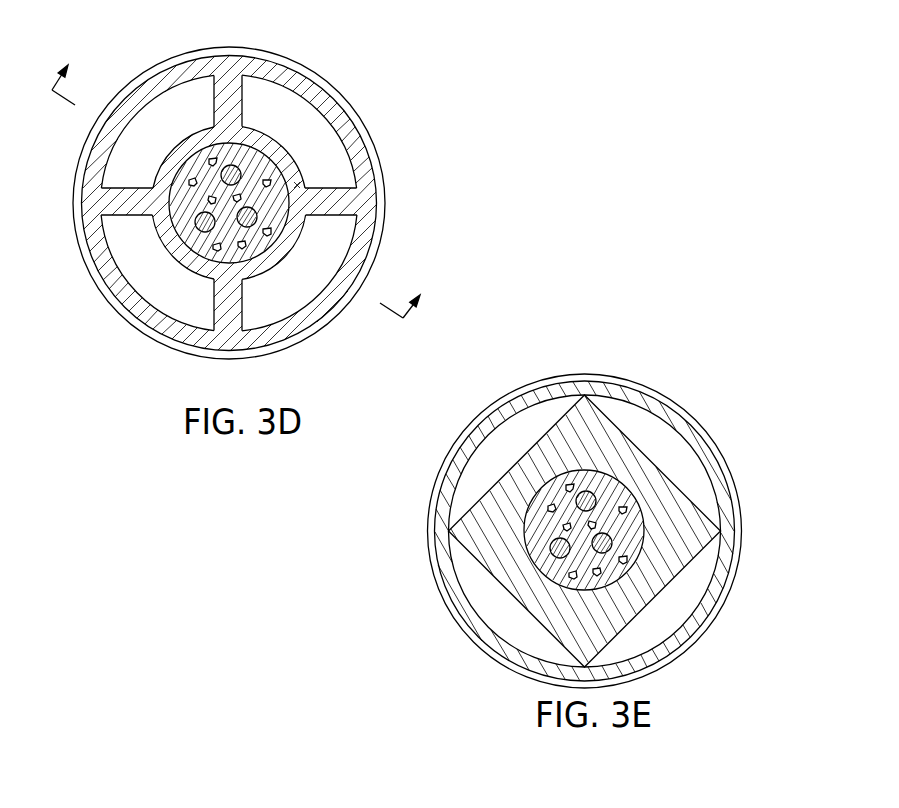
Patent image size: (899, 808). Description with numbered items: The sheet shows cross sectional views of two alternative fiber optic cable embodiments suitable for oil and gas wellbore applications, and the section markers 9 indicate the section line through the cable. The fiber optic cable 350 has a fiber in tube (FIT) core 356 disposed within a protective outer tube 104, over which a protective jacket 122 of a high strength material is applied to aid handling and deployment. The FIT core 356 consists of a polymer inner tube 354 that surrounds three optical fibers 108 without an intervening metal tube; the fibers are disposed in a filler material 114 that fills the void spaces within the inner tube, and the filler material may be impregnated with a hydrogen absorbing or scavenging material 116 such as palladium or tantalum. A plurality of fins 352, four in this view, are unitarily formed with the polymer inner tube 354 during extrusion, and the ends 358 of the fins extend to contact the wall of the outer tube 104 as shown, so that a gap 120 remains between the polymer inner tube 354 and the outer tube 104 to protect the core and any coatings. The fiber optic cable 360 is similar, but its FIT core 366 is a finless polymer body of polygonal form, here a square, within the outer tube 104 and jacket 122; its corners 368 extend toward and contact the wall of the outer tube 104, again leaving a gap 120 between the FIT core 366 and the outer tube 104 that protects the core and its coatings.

In FIG. 3D, the section line 9- 9 is at (239, 181).
In FIG. 3D, the outer tube 104 is at (376, 251).
In FIG. 3E, the outer tube 104 is at (665, 416).
In FIG. 3D, the optical fibers 108 is at (205, 232).
In FIG. 3E, the optical fibers 108 is at (558, 557).
In FIG. 3D, the filler material 114 is at (190, 177).
In FIG. 3E, the filler material 114 is at (630, 532).
In FIG. 3D, the hydrogen absorbing/scavenging material 116 is at (190, 183).
In FIG. 3E, the hydrogen absorbing/scavenging material 116 is at (627, 560).
In FIG. 3D, the gap 120 is at (300, 129).
In FIG. 3E, the gap 120 is at (486, 454).
In FIG. 3D, the protective jacket 122 is at (320, 333).
In FIG. 3E, the protective jacket 122 is at (601, 374).
In FIG. 3D, the fiber optic cable 350 is at (404, 113).
In FIG. 3D, the fins 352 is at (352, 219).
In FIG. 3D, the polymer inner tube 354 is at (273, 260).
In FIG. 3D, the FIT core 356 is at (297, 185).
In FIG. 3D, the ends 358 is at (342, 210).
In FIG. 3E, the fiber optic cable 360 is at (549, 331).
In FIG. 3E, the FIT core 366 is at (677, 485).
In FIG. 3E, the corners 368 is at (722, 533).